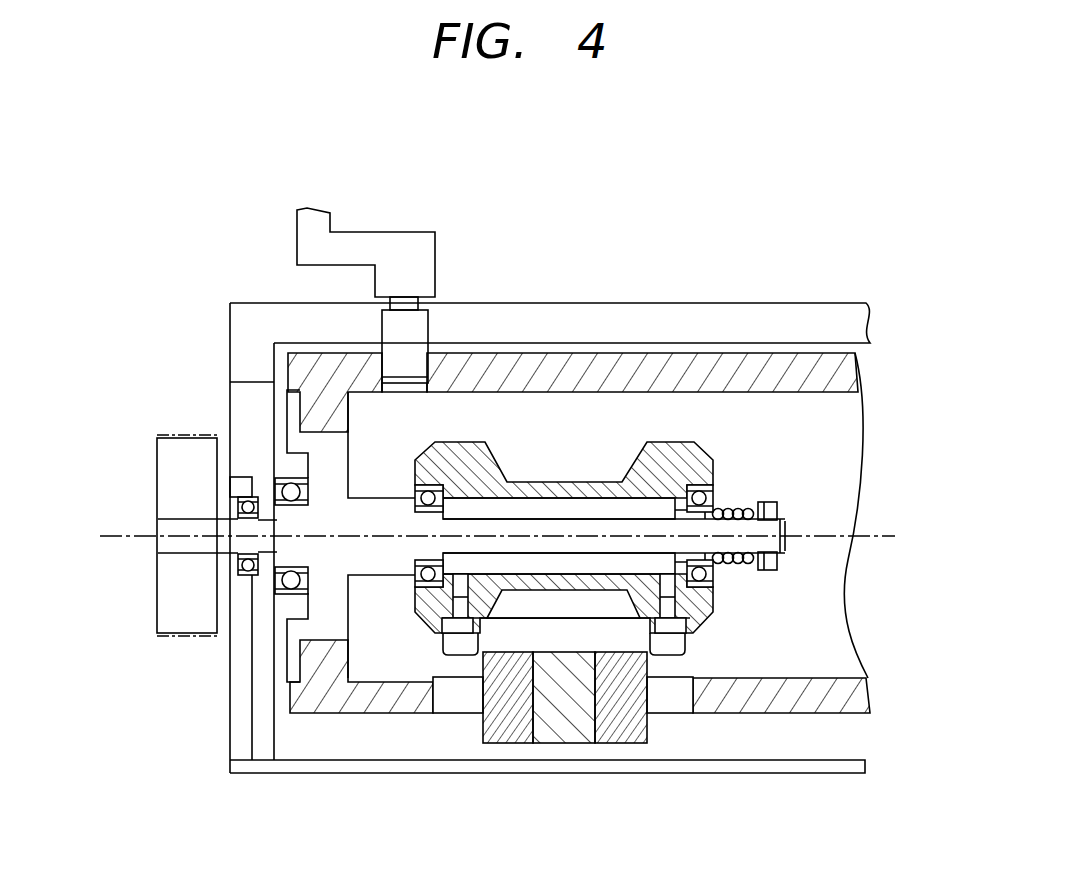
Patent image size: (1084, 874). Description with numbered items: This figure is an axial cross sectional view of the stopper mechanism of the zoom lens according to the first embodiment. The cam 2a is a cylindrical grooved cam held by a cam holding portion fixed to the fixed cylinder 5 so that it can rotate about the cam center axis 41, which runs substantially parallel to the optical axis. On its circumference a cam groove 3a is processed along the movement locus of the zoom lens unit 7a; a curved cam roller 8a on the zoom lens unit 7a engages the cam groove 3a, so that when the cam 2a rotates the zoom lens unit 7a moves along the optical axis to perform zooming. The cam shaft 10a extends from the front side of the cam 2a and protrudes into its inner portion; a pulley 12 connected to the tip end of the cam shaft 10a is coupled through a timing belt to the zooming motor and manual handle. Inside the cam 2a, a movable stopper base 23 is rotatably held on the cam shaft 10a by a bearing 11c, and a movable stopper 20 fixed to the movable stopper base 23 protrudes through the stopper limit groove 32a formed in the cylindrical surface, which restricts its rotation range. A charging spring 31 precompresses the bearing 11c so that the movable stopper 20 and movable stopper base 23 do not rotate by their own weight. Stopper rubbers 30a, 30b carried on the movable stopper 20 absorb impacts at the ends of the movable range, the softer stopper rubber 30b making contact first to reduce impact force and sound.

The cam 2a is at (827, 703).
The fixed cylinder 5 is at (240, 403).
The cam shaft 10a is at (333, 640).
The stopper limit groove 32a is at (460, 700).
The cam groove 3a is at (383, 380).
The zoom lens unit 7a is at (393, 250).
The curved cam roller 8a is at (413, 332).
The pulley 12 is at (175, 462).
The cam center axis 41 is at (124, 540).
The movable stopper base 23 is at (683, 445).
The movable stopper 20 is at (633, 638).
The stopper rubber 30a is at (500, 727).
The stopper rubber 30b is at (557, 727).
The bearing 11c is at (702, 495).
The charging spring 31 is at (740, 507).